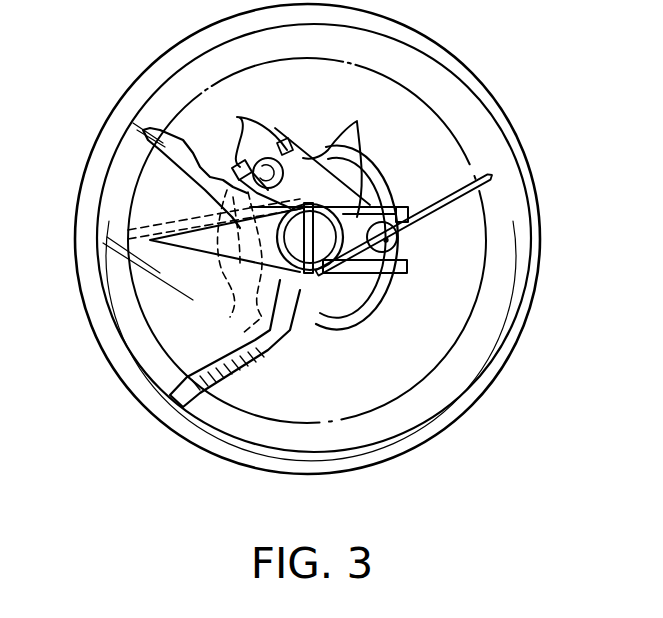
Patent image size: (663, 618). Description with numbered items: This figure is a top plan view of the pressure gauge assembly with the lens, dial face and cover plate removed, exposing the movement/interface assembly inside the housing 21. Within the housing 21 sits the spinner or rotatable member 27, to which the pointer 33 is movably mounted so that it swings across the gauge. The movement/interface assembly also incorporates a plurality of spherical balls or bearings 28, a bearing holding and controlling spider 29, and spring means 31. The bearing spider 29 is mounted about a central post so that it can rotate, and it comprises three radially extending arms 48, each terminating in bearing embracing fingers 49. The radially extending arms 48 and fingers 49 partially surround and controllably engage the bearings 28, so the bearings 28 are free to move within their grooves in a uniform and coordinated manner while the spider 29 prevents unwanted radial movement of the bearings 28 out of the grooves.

The housing 21 is at (143, 400).
The spinner or rotatable member 27 is at (323, 327).
The spherical balls or bearings 28 is at (283, 148).
The bearing holding and controlling spider 29 is at (397, 296).
The spring means 31 is at (443, 223).
The pointer 33 is at (180, 244).
The radially extending arms 48 is at (357, 120).
The bearing embracing fingers 49 is at (237, 117).